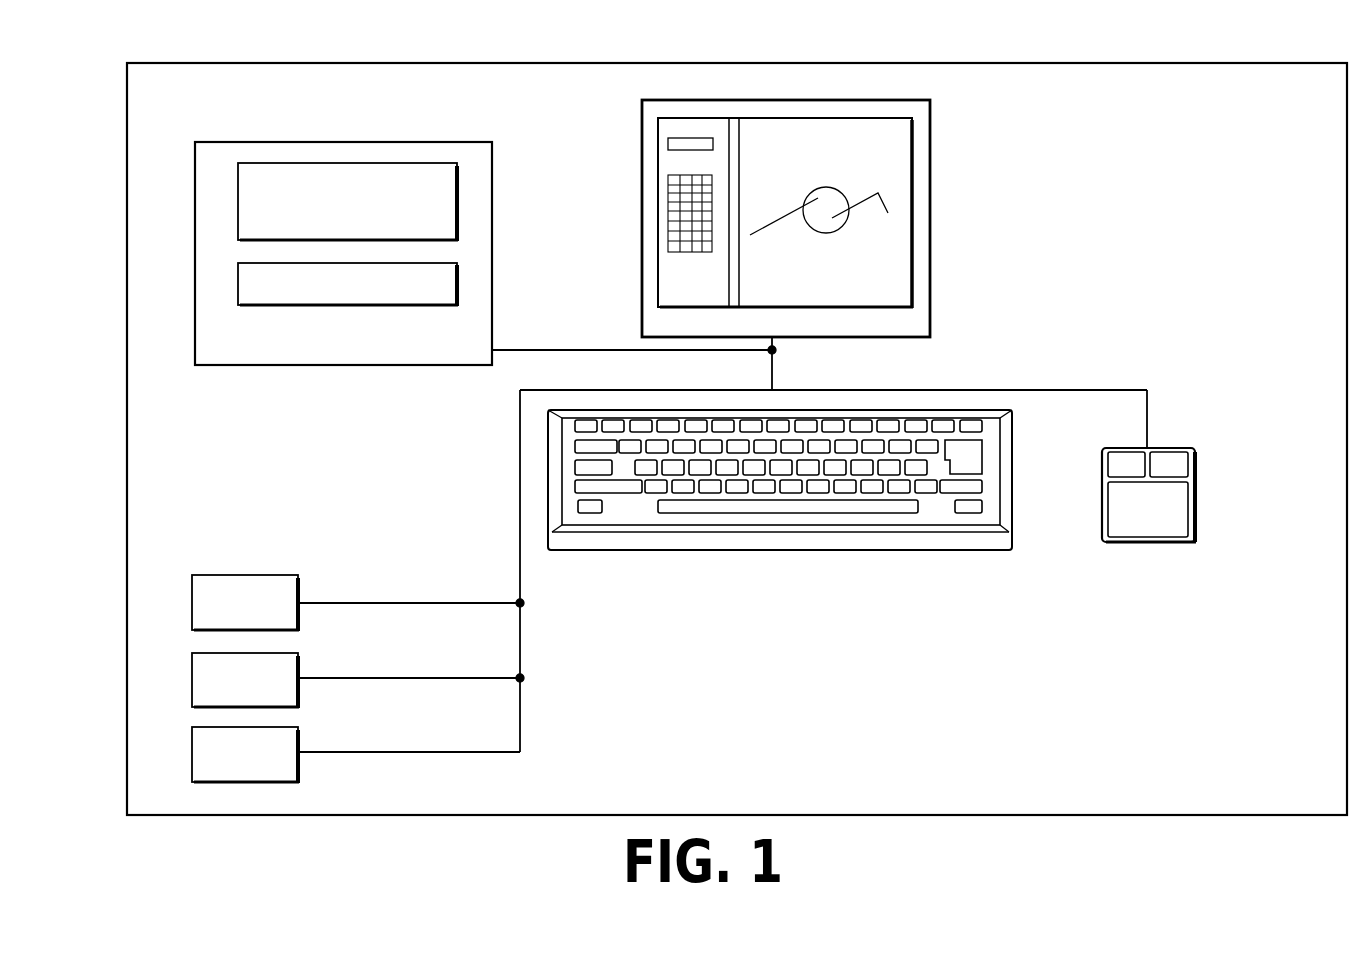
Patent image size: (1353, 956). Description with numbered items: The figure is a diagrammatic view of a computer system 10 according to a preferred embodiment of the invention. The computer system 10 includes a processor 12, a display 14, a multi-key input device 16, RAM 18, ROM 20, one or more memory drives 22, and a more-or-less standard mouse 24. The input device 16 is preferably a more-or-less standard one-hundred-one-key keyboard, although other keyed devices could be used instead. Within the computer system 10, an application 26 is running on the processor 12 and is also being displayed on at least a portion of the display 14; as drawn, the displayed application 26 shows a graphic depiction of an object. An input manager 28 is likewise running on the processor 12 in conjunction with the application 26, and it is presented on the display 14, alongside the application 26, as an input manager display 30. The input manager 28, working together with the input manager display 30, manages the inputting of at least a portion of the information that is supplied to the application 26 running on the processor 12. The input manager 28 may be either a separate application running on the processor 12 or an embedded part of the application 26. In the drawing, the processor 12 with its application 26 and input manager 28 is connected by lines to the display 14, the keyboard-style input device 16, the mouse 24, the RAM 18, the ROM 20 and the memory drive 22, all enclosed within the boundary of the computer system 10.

The computer system 10 is at (737, 439).
The processor 12 is at (343, 253).
The display 14 is at (880, 103).
The multi-key input device 16 is at (928, 552).
The RAM 18 is at (302, 575).
The ROM 20 is at (302, 653).
The memory drive 22 is at (302, 728).
The mouse 24 is at (1158, 447).
The application 26 is at (410, 163).
The input manager 28 is at (457, 285).
The input manager display 30 is at (668, 146).